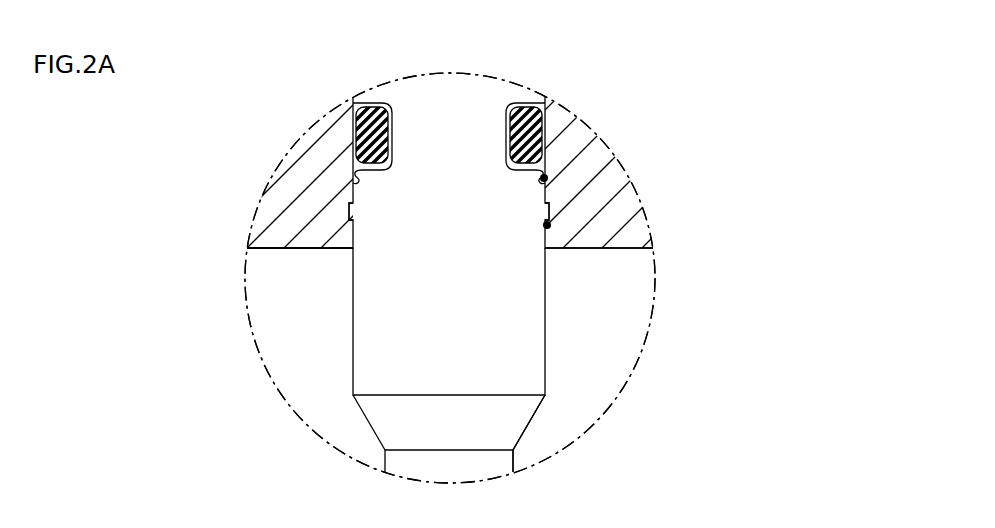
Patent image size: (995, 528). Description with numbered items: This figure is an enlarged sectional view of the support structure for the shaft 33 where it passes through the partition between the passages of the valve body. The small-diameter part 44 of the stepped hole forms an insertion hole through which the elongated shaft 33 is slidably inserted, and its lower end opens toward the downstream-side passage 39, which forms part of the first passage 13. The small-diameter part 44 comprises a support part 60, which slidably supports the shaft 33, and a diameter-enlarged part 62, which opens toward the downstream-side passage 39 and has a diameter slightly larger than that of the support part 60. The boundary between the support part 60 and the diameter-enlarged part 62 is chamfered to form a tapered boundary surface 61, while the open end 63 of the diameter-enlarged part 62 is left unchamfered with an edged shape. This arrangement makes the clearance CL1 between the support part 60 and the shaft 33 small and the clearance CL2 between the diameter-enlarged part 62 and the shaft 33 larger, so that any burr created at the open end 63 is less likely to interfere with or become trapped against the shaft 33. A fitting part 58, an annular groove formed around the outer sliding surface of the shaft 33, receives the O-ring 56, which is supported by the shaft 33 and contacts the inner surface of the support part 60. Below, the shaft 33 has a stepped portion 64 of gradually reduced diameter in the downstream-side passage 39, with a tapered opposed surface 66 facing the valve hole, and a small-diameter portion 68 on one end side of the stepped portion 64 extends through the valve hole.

The downstream-side passage 39 is at (303, 352).
The first passage 13 is at (450, 278).
The small-diameter part 44 is at (193, 167).
The support part 60 is at (355, 177).
The diameter-enlarged part 62 is at (350, 210).
The open end 63 is at (353, 250).
The O-ring 56 is at (547, 139).
The fitting part 58 is at (532, 122).
The clearance CL1 is at (544, 178).
The tapered boundary surface 61 is at (550, 212).
The clearance CL2 is at (547, 225).
The shaft 33 is at (545, 292).
The tapered opposed surface 66 is at (515, 423).
The stepped portion 64 is at (534, 445).
The small-diameter portion 68 is at (515, 462).